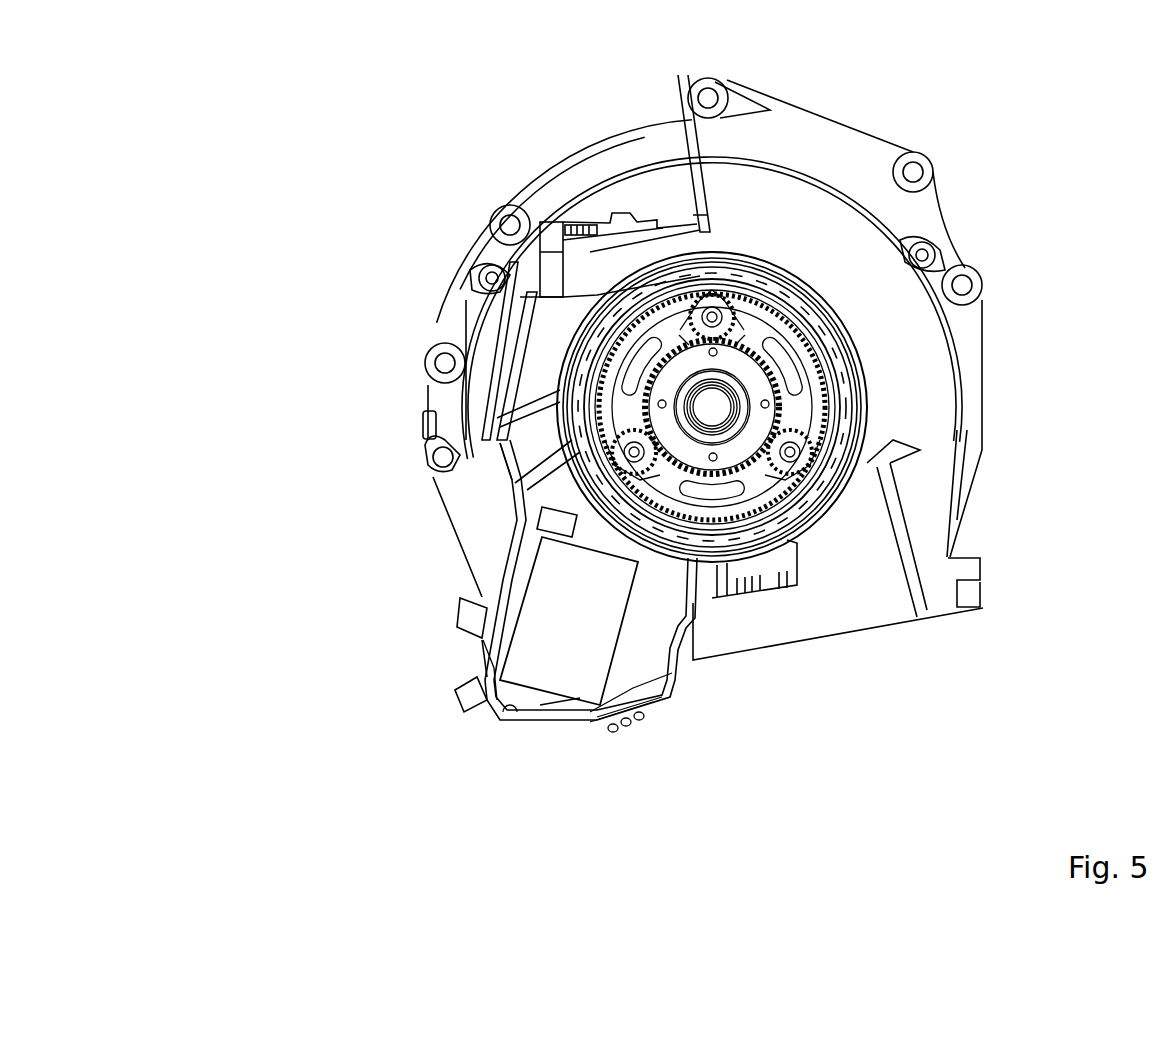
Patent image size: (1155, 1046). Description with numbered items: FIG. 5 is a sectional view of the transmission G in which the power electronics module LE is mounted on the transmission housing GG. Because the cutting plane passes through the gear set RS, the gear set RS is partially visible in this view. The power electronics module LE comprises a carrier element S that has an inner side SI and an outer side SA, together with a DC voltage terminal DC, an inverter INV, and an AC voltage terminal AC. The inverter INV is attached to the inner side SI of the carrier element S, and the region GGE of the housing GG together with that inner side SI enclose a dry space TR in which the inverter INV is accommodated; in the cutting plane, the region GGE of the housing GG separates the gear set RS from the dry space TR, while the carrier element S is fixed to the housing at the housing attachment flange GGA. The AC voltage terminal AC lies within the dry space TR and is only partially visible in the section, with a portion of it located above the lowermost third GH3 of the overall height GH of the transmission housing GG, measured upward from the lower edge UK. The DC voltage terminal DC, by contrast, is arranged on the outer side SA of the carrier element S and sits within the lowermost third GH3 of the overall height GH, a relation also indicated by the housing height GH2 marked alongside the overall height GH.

The transmission G is at (1005, 155).
The transmission housing GG is at (820, 143).
The gear set RS is at (783, 297).
The region of the housing GGE is at (671, 633).
The housing attachment flange GGA is at (665, 558).
The inverter INV is at (540, 637).
The AC voltage terminal AC is at (553, 532).
The DC voltage terminal DC is at (463, 612).
The carrier element S is at (495, 717).
The outer side SA is at (497, 700).
The inner side SI is at (510, 707).
The dry space TR is at (545, 700).
The lower edge UK is at (613, 700).
The power electronics module LE is at (514, 556).
The overall height GH is at (1090, 740).
The housing height 2 GH2 is at (1090, 408).
The lowermost third GH3 is at (1090, 527).